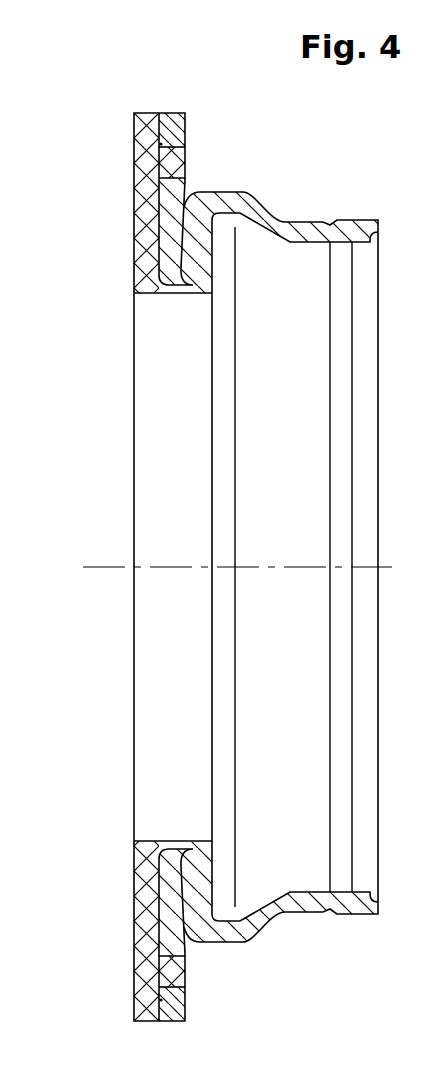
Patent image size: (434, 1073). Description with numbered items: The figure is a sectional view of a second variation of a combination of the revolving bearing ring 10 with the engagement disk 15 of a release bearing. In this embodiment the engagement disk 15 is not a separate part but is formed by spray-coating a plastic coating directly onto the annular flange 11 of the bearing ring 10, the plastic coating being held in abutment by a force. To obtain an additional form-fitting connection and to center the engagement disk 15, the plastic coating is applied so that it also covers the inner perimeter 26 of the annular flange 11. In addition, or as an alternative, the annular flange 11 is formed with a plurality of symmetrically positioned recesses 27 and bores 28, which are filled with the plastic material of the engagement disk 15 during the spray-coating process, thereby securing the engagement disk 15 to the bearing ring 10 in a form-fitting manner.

The revolving bearing ring 10 is at (333, 934).
The annular flange 11 is at (177, 957).
The engagement disk 15 is at (137, 145).
The inner perimeter 26 is at (162, 838).
The recesses 27 is at (187, 990).
The bores 28 is at (168, 147).